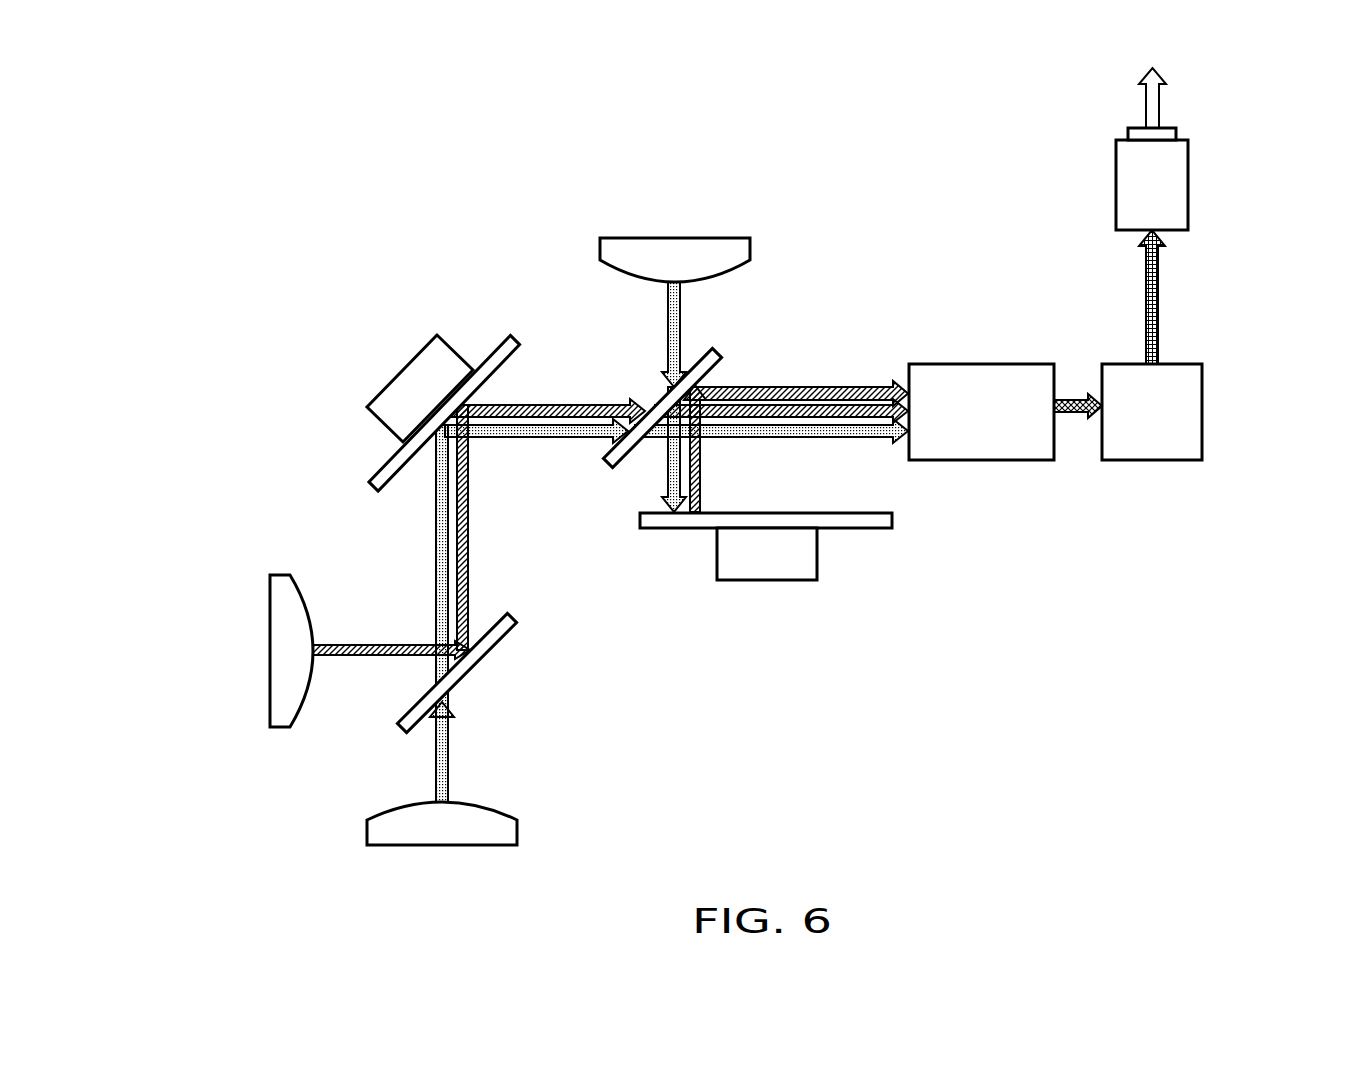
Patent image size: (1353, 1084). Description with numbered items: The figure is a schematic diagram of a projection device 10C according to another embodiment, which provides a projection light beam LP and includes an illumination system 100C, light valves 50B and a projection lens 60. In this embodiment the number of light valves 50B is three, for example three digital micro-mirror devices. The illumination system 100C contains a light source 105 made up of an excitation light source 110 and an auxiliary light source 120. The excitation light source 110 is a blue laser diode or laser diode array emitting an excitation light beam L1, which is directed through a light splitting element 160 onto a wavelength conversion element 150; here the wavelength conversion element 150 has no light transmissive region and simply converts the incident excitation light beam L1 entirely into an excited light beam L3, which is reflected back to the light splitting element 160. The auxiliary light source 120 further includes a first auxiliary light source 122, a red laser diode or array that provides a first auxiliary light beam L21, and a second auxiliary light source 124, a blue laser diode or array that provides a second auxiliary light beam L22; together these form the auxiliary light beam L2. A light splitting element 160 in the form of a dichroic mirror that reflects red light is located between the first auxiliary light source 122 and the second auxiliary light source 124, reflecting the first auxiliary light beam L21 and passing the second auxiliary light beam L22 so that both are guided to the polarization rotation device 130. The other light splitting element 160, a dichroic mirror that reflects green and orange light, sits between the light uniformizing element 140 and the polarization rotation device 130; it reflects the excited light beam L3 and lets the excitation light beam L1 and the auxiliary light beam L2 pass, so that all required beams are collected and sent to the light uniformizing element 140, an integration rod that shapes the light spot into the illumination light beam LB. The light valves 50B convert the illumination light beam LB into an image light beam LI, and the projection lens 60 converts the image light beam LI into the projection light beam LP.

The projection device 10C is at (1295, 729).
The illumination system 100C is at (438, 214).
The light source 105 is at (168, 107).
The excitation light source 110 is at (678, 262).
The auxiliary light source 120 is at (232, 137).
The first auxiliary light source 122 is at (286, 585).
The second auxiliary light source 124 is at (500, 826).
The polarization rotation device 130 is at (418, 383).
The light uniformizing element 140 is at (980, 450).
The wavelength conversion element 150 is at (808, 550).
The light splitting element 160 is at (607, 462).
The light valve 50B is at (1200, 433).
The projection lens 60 is at (1178, 200).
The excitation light beam L1 is at (668, 338).
The auxiliary light beam L2 is at (527, 437).
The first auxiliary light beam L21 is at (383, 645).
The second auxiliary light beam L22 is at (450, 752).
The excited light beam L3 is at (694, 480).
The illumination light beam LB is at (1072, 418).
The image light beam LI is at (1158, 316).
The projection light beam LP is at (1157, 100).